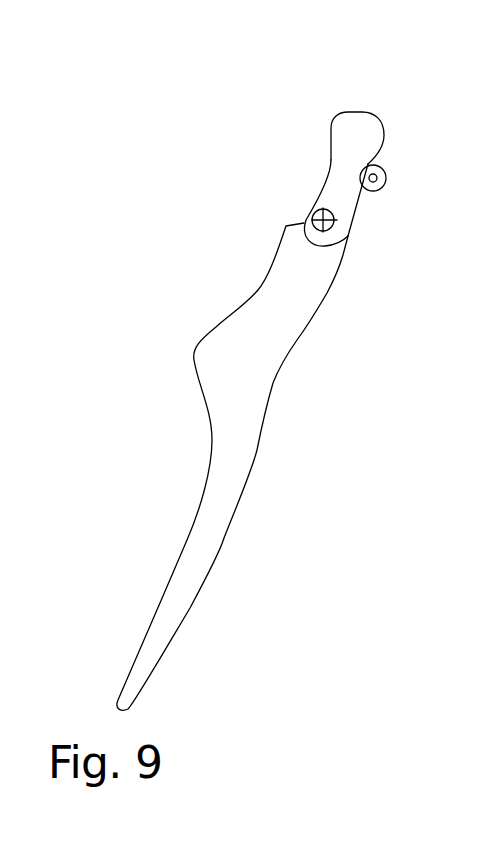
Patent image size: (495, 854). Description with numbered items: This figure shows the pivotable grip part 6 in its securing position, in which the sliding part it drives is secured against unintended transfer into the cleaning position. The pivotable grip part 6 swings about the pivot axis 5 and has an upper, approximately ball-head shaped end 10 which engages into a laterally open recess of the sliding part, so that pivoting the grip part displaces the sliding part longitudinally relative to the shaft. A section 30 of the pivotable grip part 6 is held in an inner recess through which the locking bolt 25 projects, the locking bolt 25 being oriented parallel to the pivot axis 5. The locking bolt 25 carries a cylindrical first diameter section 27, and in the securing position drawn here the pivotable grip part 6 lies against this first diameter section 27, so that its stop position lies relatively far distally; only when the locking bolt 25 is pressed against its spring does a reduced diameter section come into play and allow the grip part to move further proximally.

The pivot axis 5 is at (350, 227).
The pivotable grip part 6 is at (263, 363).
The upper end 10 is at (358, 130).
The locking bolt 25 is at (386, 183).
The first diameter section 27 is at (381, 168).
The section 30 is at (337, 185).